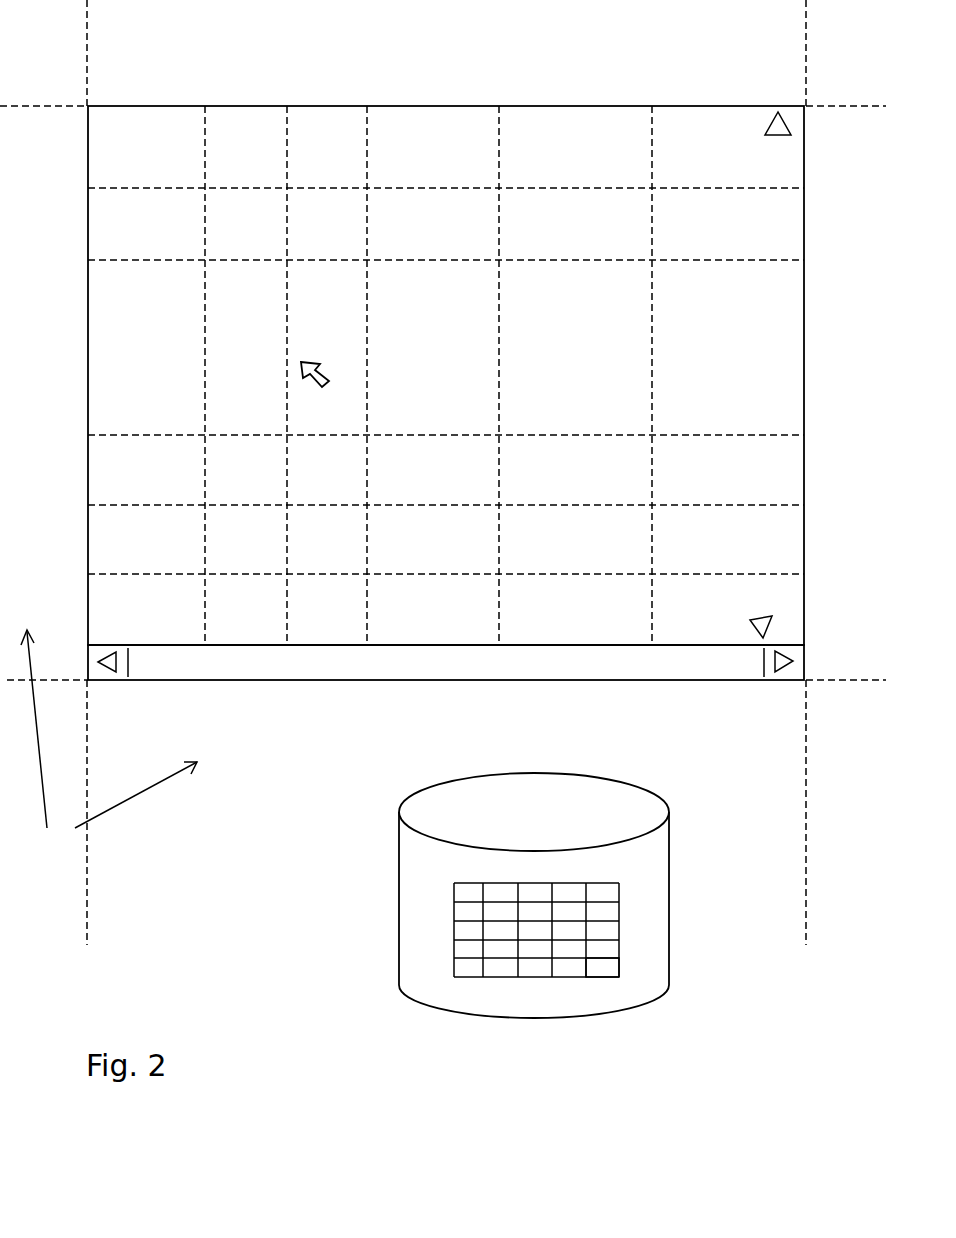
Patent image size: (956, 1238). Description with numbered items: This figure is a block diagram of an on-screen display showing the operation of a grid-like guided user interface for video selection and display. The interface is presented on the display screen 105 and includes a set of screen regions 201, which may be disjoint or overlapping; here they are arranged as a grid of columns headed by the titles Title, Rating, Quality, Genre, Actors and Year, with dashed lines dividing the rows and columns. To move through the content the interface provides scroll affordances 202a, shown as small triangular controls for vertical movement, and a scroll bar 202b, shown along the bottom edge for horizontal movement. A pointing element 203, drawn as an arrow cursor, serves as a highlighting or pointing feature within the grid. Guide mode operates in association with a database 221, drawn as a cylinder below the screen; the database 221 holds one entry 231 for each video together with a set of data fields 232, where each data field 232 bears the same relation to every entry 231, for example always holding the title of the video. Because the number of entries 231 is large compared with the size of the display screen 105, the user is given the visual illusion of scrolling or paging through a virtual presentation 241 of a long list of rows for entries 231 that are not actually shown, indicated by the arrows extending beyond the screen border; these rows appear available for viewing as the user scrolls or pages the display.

The display screen 105 is at (175, 120).
The screen regions 201 is at (100, 622).
The scroll affordances 202a is at (785, 110).
The scroll bars 202b is at (661, 660).
The pointing element 203 is at (325, 361).
The database 221 is at (602, 808).
The entry 231 is at (620, 902).
The data fields 232 is at (590, 977).
The virtual presentation 241 is at (109, 748).